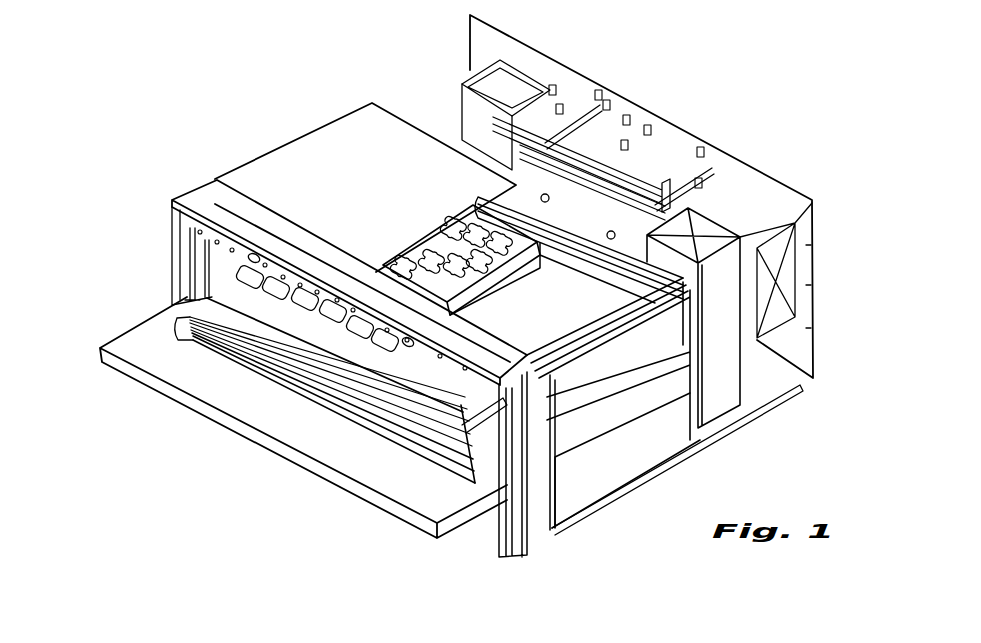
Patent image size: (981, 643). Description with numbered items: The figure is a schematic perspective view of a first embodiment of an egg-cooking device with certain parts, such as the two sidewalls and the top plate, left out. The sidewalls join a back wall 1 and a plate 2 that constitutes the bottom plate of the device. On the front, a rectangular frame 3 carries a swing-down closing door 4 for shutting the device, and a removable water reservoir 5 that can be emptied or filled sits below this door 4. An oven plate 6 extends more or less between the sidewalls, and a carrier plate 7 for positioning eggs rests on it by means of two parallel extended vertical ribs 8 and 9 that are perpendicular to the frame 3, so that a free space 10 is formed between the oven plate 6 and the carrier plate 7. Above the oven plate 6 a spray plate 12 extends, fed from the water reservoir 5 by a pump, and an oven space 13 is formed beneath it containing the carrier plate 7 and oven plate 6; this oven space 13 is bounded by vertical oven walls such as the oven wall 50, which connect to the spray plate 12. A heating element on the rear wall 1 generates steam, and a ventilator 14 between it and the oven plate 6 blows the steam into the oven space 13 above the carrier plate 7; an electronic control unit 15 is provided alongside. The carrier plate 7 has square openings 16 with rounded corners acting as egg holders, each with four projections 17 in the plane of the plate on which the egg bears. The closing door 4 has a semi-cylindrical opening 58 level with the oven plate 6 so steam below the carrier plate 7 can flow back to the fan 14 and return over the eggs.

The back wall 1 is at (754, 187).
The plate 2 is at (707, 430).
The rectangular frame 3 is at (518, 523).
The swing-down closing door 4 is at (267, 405).
The water reservoir 5 is at (597, 471).
The oven plate 6 is at (448, 393).
The carrier plate 7 is at (262, 300).
The vertical rib 8 is at (343, 370).
The vertical rib 9 is at (190, 297).
The free space 10 is at (247, 310).
The spray plate 12 is at (322, 183).
The oven space 13 is at (545, 325).
The ventilator 14 is at (575, 200).
The electronic control unit 15 is at (720, 352).
The square openings 16 is at (440, 250).
The projections 17 is at (410, 247).
The oven wall 50 is at (618, 360).
The opening 58 is at (383, 423).